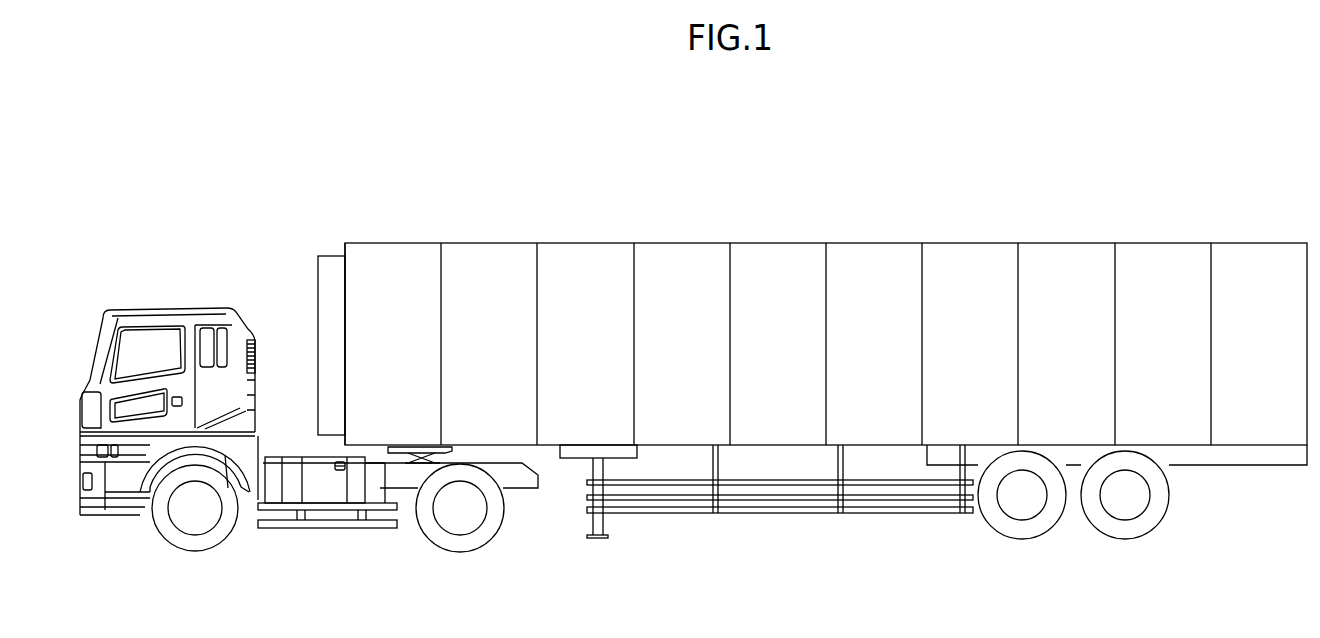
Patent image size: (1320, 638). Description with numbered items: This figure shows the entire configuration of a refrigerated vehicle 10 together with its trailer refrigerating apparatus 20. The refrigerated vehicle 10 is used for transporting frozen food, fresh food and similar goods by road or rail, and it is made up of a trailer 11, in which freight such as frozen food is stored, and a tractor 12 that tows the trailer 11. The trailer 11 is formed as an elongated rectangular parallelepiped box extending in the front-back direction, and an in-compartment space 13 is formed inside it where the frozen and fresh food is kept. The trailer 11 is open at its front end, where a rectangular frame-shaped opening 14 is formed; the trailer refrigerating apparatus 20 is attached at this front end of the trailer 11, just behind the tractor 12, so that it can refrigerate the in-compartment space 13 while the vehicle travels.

The refrigerated vehicle 10 is at (217, 167).
The trailer 11 is at (770, 243).
The tractor 12 is at (163, 308).
The in-compartment space 13 is at (675, 283).
The opening 14 is at (345, 281).
The trailer refrigerating apparatus 20 is at (318, 272).